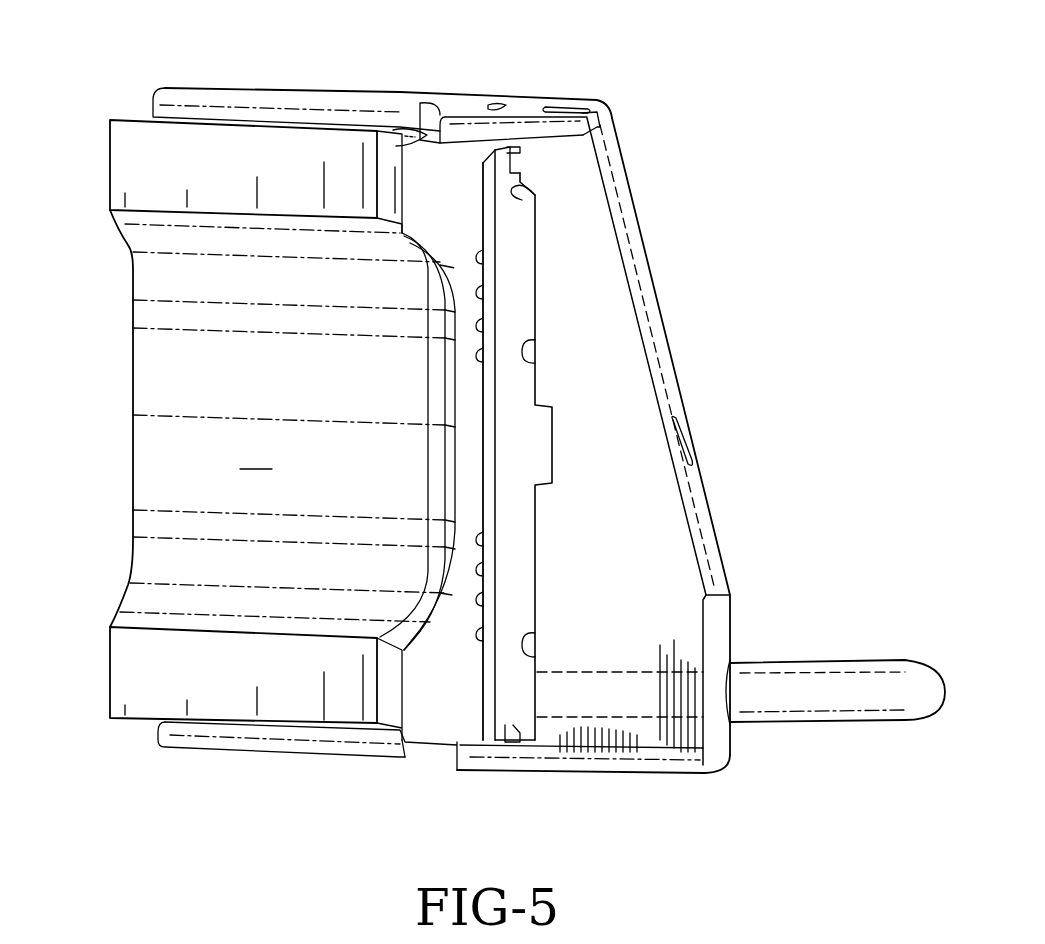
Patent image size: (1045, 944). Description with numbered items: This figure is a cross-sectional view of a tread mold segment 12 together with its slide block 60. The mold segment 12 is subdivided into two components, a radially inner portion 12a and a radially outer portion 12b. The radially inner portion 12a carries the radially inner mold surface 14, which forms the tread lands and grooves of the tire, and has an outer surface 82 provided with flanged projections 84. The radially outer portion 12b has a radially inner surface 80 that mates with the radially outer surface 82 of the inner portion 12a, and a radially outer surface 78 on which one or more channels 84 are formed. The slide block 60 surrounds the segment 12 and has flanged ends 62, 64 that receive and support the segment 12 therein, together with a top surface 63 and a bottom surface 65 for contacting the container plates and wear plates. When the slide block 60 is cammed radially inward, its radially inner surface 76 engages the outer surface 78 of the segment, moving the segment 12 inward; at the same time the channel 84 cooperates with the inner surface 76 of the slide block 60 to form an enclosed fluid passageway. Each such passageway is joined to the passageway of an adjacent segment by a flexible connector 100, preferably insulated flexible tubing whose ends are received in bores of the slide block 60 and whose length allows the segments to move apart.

The tread mold segment 12 is at (437, 190).
The radially inner portion 12a is at (170, 480).
The radially outer portion 12b is at (515, 600).
The radially inner mold surface 14 is at (287, 437).
The slide block 60 is at (618, 268).
The flanged end 62 is at (478, 130).
The top surface 63 is at (305, 88).
The flanged end 64 is at (483, 752).
The bottom surface 65 is at (612, 773).
The radially inner surface 76 is at (520, 192).
The radially outer surface 78 is at (430, 477).
The radially inner surface 80 is at (485, 395).
The radially outer surface 82 is at (495, 448).
The flanged projections / channel 84 is at (520, 150).
The flexible connector 100 is at (837, 697).